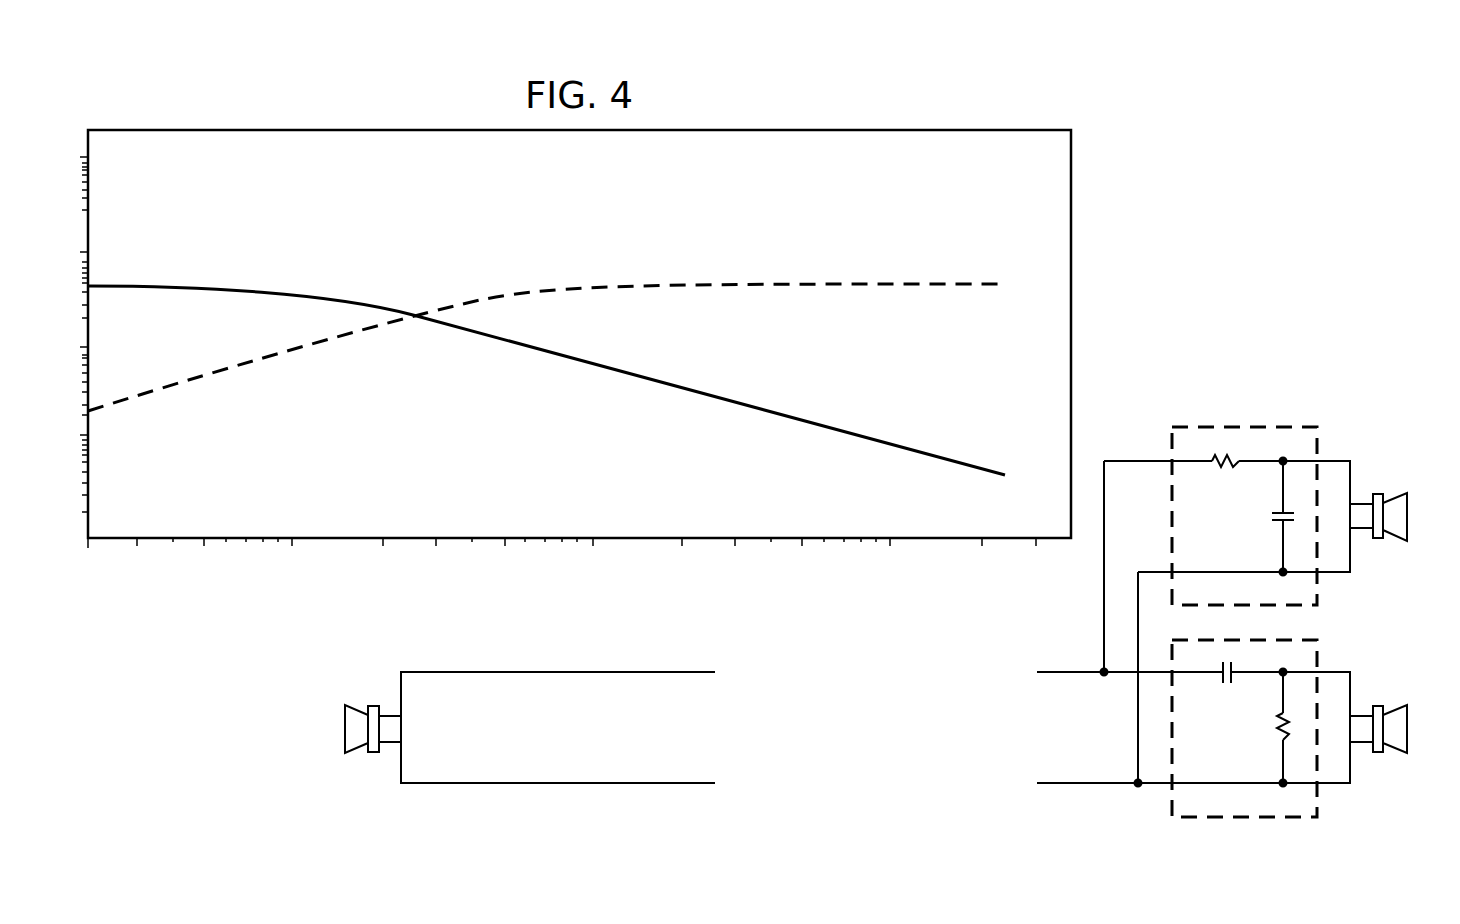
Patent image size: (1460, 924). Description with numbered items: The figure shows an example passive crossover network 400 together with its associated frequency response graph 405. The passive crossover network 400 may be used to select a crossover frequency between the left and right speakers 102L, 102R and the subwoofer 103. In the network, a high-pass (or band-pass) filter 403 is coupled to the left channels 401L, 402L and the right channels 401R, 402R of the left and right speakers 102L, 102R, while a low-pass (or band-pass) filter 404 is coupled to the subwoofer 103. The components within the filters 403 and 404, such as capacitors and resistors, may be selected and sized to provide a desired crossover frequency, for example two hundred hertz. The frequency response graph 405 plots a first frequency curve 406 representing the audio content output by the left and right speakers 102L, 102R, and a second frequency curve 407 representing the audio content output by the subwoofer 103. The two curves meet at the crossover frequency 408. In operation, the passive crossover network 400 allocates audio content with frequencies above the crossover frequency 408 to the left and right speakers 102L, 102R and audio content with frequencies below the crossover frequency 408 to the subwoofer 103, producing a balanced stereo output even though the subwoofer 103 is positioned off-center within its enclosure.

The passive crossover network 400 is at (1339, 72).
The frequency response graph 405 is at (366, 185).
The first frequency curve 406 is at (846, 284).
The second frequency curve 407 is at (842, 431).
The crossover frequency 408 is at (412, 321).
The low-pass filter 404 is at (1257, 429).
The high-pass filter 403 is at (1257, 815).
The subwoofer 103 is at (1379, 492).
The left speaker 102L is at (1381, 755).
The right speaker 102R is at (366, 755).
The right channel 401R is at (680, 672).
The right channel 402R is at (678, 783).
The left channel 401L is at (1072, 672).
The left channel 402L is at (1072, 783).